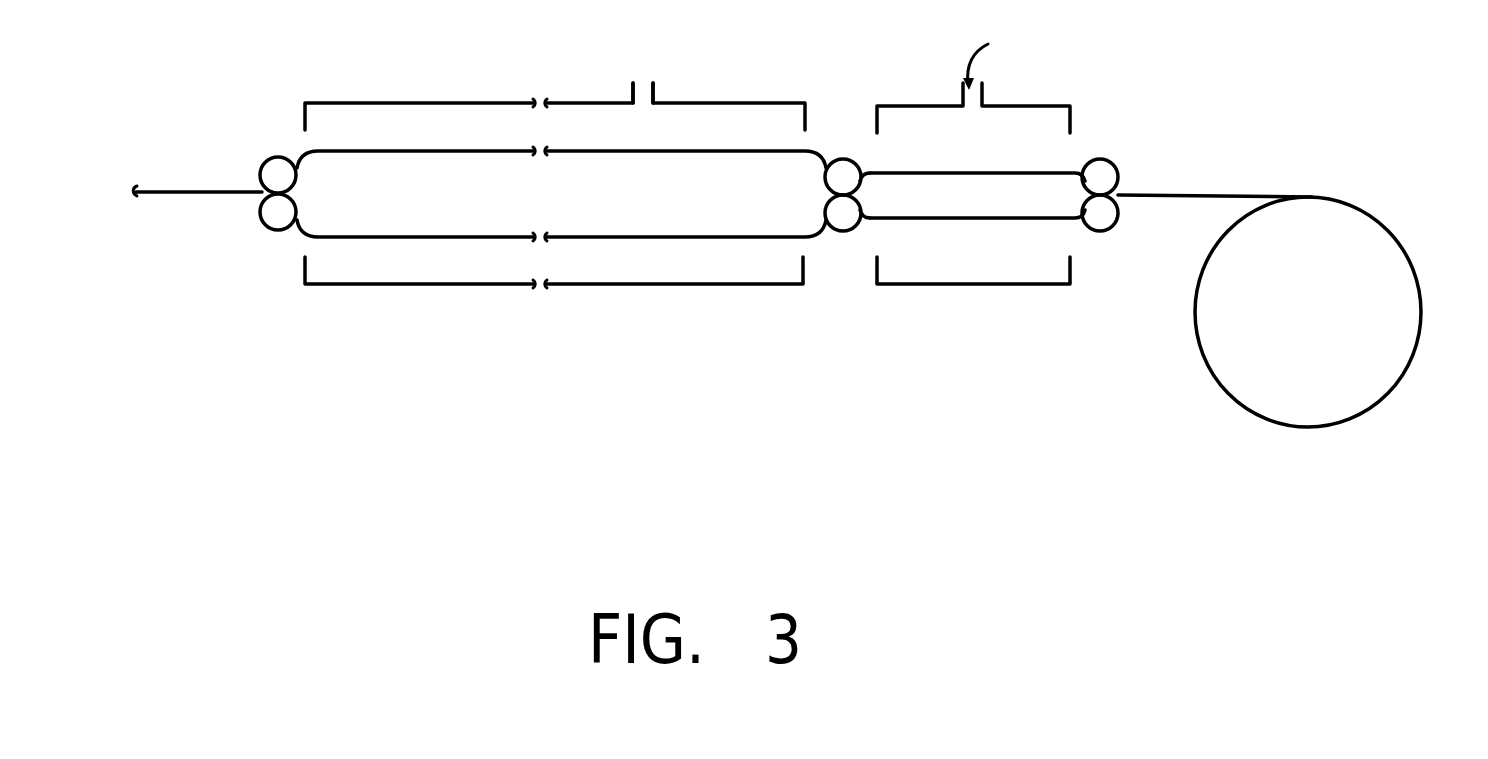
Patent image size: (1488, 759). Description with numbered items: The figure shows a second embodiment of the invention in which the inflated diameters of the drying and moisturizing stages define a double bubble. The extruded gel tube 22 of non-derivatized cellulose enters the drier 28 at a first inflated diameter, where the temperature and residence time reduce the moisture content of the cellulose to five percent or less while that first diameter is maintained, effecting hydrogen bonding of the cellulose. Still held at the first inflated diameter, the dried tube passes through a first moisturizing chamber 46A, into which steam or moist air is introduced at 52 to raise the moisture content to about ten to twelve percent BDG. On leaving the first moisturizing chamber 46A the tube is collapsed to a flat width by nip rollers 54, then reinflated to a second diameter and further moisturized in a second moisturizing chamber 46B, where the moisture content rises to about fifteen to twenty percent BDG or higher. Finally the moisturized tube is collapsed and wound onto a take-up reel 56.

The extruded gel tube 22 is at (198, 190).
The drier 28 is at (458, 103).
The steam or moist air inlet 52 is at (644, 90).
The first moisturizing chamber 46A is at (702, 103).
The second moisturizing chamber 46B is at (1028, 106).
The nip rollers 54 is at (843, 231).
The take-up reel 56 is at (1372, 211).